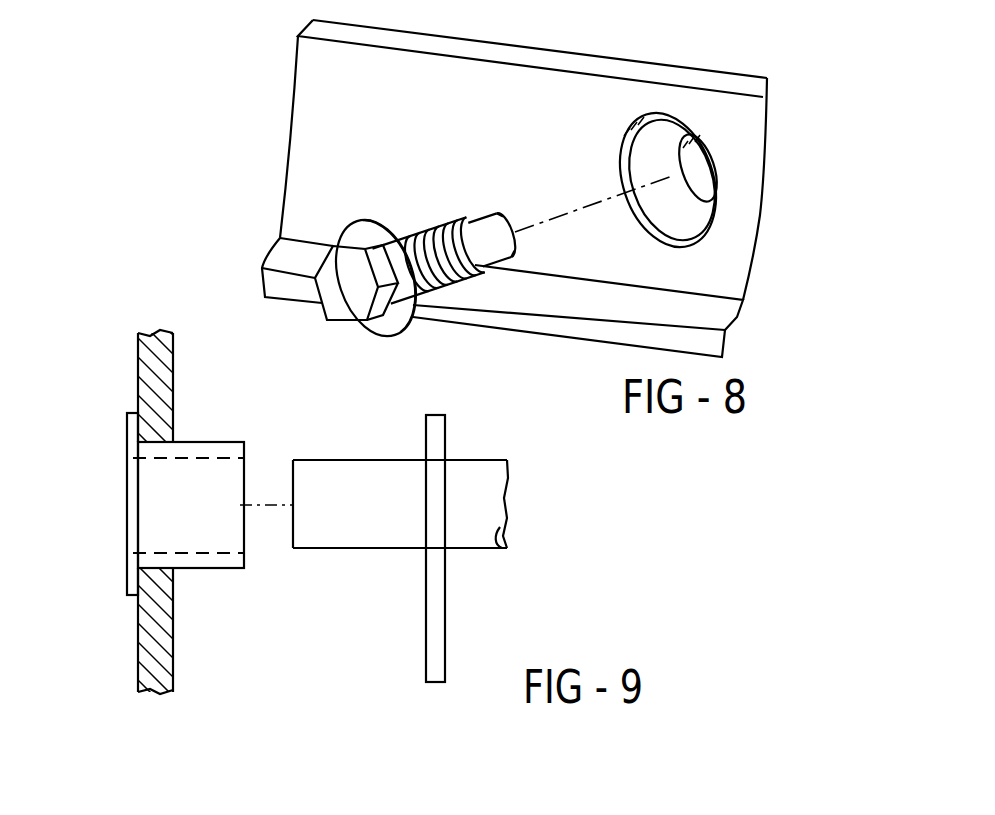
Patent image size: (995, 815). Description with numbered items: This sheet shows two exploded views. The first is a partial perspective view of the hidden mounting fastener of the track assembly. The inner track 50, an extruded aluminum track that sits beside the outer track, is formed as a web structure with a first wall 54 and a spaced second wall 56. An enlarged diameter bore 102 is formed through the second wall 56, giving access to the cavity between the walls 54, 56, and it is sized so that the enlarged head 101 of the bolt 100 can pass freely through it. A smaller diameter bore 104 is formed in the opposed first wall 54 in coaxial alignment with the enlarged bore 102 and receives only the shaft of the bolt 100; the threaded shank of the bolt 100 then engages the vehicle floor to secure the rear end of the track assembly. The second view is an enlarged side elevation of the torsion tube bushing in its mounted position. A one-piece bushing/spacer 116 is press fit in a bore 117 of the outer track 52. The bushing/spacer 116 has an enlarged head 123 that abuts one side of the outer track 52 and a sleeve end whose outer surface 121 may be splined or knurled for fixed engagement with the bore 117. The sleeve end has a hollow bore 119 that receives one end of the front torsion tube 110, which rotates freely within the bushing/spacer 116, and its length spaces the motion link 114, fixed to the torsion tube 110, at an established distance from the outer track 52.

In FIG. 8, the inner track 50 is at (812, 180).
In FIG. 8, the first wall 54 is at (658, 135).
In FIG. 8, the second wall 56 is at (738, 240).
In FIG. 8, the bolt 100 is at (413, 199).
In FIG. 8, the enlarged head 101 is at (357, 240).
In FIG. 8, the enlarged diameter bore 102 is at (685, 218).
In FIG. 8, the smaller diameter bore 104 is at (692, 150).
In FIG. 9, the outer track 52 is at (155, 373).
In FIG. 9, the front torsion tube 110 is at (347, 436).
In FIG. 9, the motion link 114 is at (437, 638).
In FIG. 9, the bushing/spacer 116 is at (120, 445).
In FIG. 9, the bore 117 is at (158, 562).
In FIG. 9, the hollow bore 119 is at (218, 548).
In FIG. 9, the outer surface 121 is at (204, 572).
In FIG. 9, the enlarged head 123 is at (138, 582).